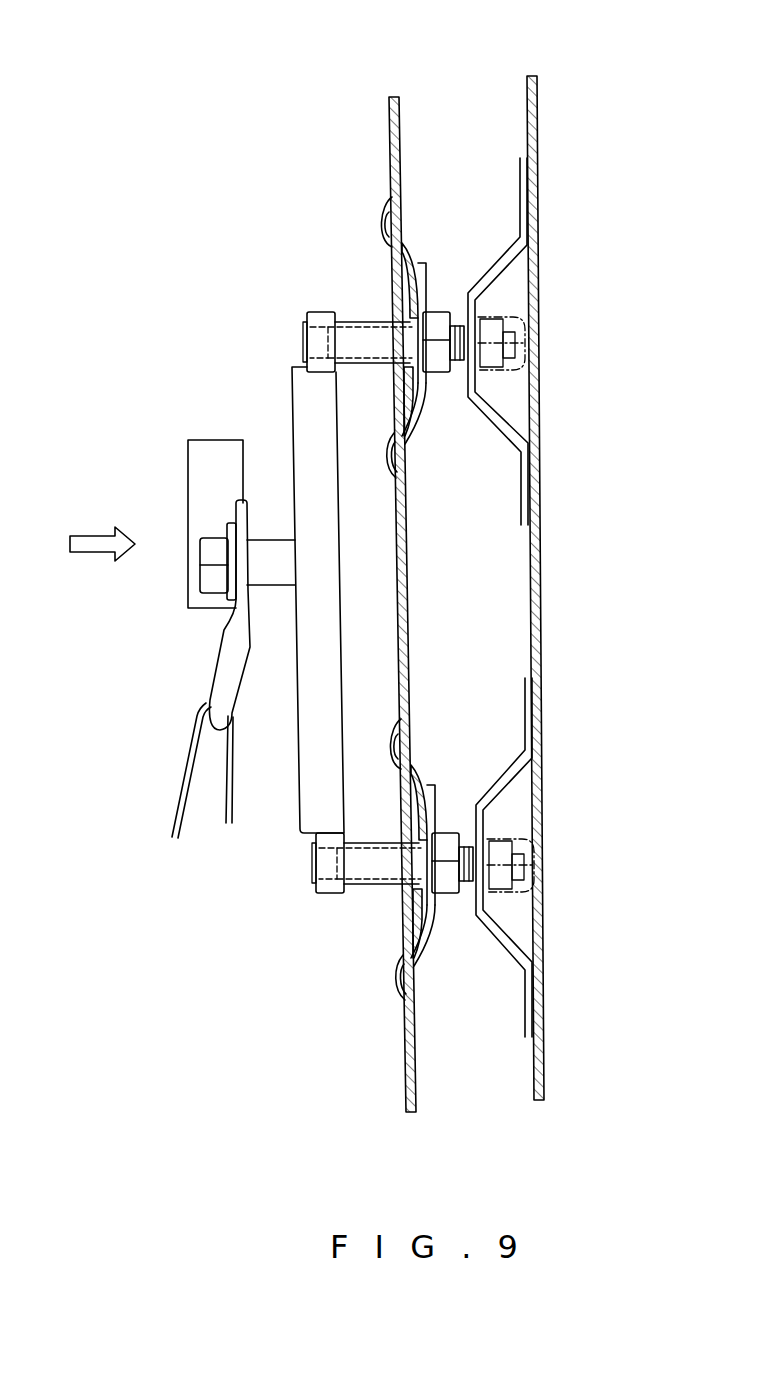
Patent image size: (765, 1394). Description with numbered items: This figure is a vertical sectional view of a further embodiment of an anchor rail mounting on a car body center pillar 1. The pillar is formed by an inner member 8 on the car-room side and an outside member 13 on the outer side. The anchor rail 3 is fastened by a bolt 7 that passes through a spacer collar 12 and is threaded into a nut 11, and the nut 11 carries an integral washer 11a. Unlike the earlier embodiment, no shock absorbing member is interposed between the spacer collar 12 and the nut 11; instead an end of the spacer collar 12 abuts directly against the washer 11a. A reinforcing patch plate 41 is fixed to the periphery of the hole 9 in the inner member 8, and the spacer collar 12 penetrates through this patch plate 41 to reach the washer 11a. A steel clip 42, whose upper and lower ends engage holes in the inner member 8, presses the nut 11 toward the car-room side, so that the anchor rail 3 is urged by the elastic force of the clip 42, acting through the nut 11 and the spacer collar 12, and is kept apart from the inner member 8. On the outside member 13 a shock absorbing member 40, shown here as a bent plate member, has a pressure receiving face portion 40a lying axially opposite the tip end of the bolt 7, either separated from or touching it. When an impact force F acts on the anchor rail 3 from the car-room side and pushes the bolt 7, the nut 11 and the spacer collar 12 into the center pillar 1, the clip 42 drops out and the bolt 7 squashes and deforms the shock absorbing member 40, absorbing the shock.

The center pillar 1 is at (474, 81).
The anchor rail 3 is at (292, 410).
The bolt 7 is at (453, 367).
The inner member 8 is at (388, 149).
The hole 9 is at (396, 320).
The nut 11 is at (437, 312).
The washer 11a is at (428, 272).
The spacer collar 12 is at (354, 318).
The outside member 13 is at (538, 146).
The shock absorbing member 40 is at (507, 258).
The pressure receiving face portion 40a is at (478, 374).
The reinforcing patch plate 41 is at (401, 390).
The steel clip 42 is at (413, 437).